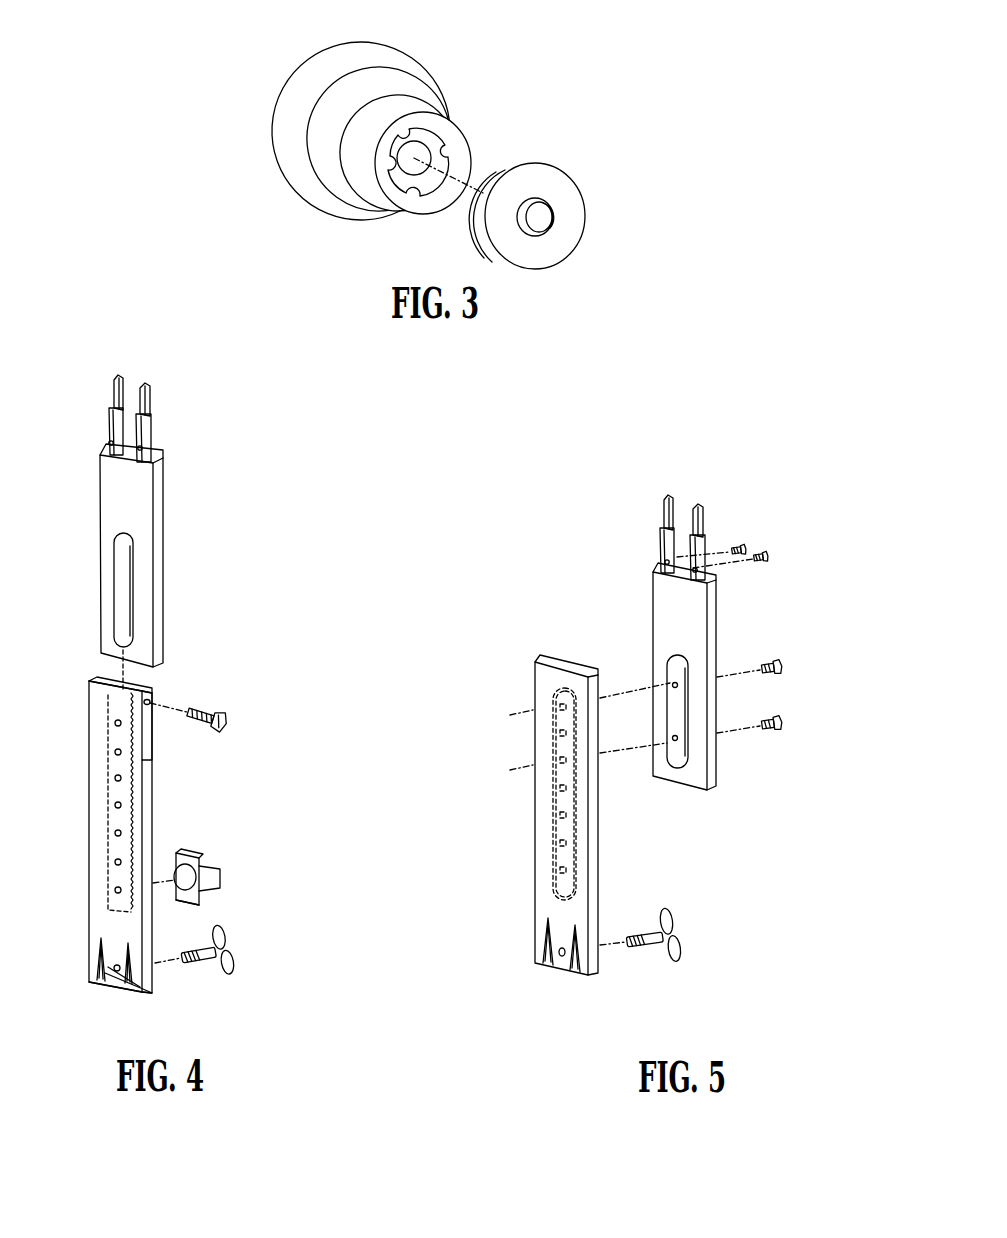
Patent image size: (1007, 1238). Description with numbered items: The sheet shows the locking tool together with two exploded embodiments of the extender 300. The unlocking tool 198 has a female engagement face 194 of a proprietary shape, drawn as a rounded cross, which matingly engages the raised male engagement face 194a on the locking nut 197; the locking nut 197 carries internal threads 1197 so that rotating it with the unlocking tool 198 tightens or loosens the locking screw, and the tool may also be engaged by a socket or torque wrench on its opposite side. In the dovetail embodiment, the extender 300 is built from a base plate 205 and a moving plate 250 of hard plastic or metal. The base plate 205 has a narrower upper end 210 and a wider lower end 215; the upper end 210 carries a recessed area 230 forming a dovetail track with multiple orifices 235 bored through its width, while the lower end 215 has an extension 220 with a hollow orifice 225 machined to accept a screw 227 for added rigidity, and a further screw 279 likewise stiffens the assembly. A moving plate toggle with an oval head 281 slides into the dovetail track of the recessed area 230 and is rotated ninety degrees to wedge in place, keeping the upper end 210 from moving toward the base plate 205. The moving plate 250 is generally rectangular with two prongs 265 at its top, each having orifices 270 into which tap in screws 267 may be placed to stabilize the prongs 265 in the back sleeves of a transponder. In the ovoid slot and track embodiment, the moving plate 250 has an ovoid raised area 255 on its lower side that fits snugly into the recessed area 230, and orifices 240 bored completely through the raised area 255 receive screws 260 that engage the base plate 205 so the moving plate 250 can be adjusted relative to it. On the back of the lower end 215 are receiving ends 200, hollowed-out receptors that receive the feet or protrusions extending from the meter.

In FIG. 3, the unlocking tool 198 is at (366, 62).
In FIG. 3, the female engagement face 194 is at (435, 138).
In FIG. 3, the male engagement face 194a is at (481, 194).
In FIG. 3, the locking nut 197 is at (560, 192).
In FIG. 3, the internal threads 1197 is at (552, 223).
In FIG. 4, the prongs 265 is at (145, 385).
In FIG. 4, the orifices 270 is at (136, 450).
In FIG. 4, the moving plate 250 is at (163, 515).
In FIG. 4, the raised area 255 is at (123, 588).
In FIG. 5, the raised area 255 is at (673, 668).
In FIG. 4, the recessed area 230 is at (127, 688).
In FIG. 4, the extender 300 is at (205, 666).
In FIG. 4, the screw 279 is at (217, 706).
In FIG. 4, the upper end 210 is at (153, 742).
In FIG. 4, the base plate 205 is at (153, 798).
In FIG. 4, the orifices 235 is at (113, 724).
In FIG. 4, the head 281 is at (182, 892).
In FIG. 4, the screw 227 is at (223, 952).
In FIG. 4, the lower end 215 is at (155, 983).
In FIG. 4, the orifice 225 is at (103, 983).
In FIG. 4, the extension 220 is at (150, 992).
In FIG. 5, the tap in screws 267 is at (767, 552).
In FIG. 5, the orifices 240 is at (675, 688).
In FIG. 5, the screws 260 is at (782, 667).
In FIG. 5, the receiving ends 200 is at (578, 973).